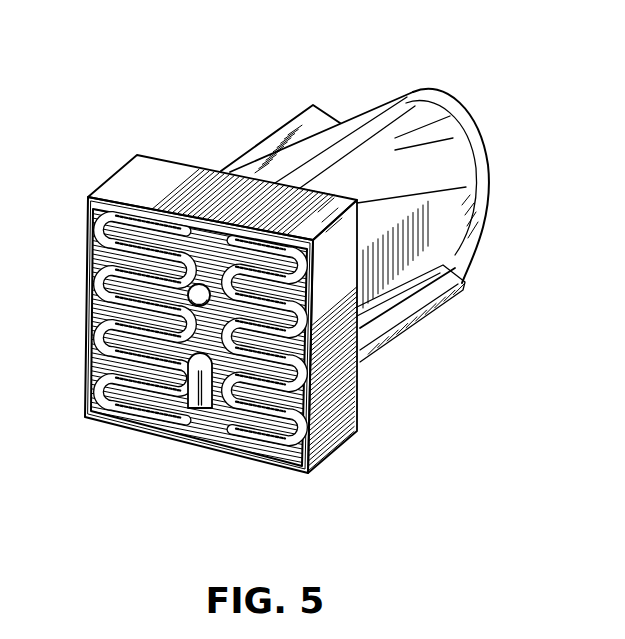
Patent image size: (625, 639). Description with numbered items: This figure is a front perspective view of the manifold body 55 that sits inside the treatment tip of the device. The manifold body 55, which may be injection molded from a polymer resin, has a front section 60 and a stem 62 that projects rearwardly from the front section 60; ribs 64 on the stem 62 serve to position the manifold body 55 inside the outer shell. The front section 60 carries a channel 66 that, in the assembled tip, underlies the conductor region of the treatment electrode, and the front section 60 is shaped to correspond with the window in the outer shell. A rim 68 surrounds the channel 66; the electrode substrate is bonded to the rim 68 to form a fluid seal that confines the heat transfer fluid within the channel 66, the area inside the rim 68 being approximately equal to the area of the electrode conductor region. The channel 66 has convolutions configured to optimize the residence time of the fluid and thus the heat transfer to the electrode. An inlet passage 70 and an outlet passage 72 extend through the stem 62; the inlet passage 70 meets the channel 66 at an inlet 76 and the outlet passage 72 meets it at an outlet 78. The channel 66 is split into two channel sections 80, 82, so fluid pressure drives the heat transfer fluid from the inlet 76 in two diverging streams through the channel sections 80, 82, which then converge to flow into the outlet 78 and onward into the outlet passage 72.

The manifold body 55 is at (276, 280).
The front section 60 is at (125, 166).
The stem 62 is at (437, 87).
The ribs 64 is at (407, 97).
The channel 66 is at (218, 379).
The rim 68 is at (86, 197).
The inlet passage 70 is at (185, 431).
The outlet passage 72 is at (199, 210).
The inlet 76 is at (196, 440).
The outlet 78 is at (204, 283).
The channel section 80 is at (107, 331).
The channel section 82 is at (293, 383).